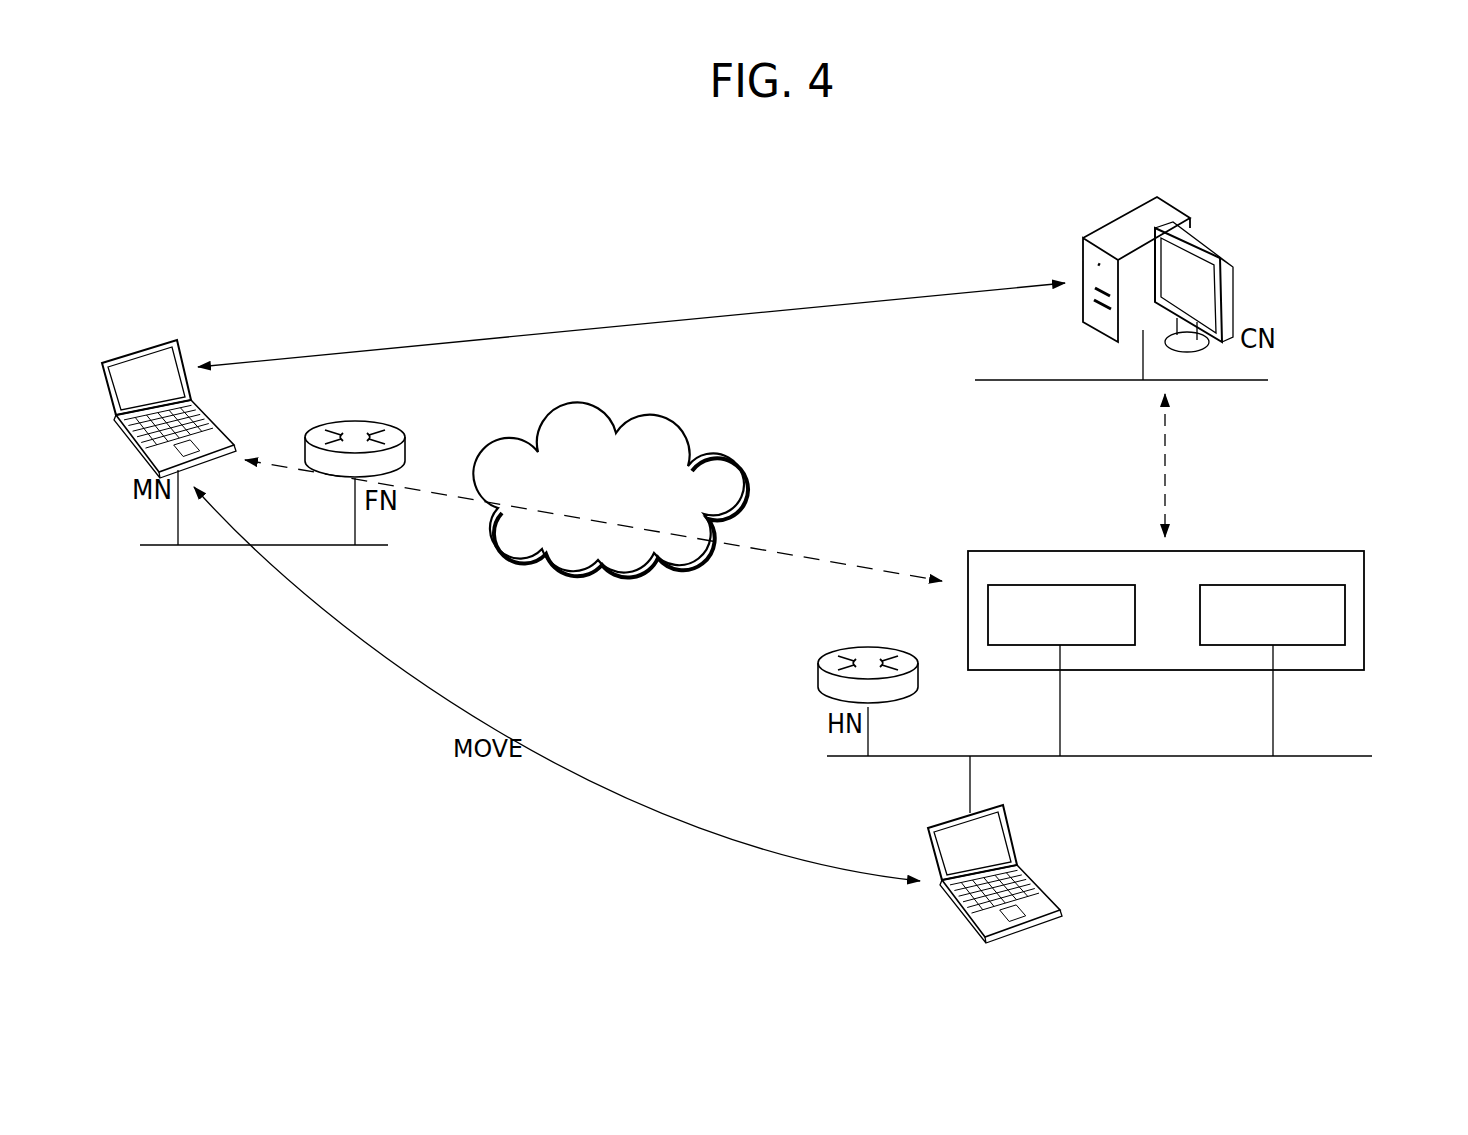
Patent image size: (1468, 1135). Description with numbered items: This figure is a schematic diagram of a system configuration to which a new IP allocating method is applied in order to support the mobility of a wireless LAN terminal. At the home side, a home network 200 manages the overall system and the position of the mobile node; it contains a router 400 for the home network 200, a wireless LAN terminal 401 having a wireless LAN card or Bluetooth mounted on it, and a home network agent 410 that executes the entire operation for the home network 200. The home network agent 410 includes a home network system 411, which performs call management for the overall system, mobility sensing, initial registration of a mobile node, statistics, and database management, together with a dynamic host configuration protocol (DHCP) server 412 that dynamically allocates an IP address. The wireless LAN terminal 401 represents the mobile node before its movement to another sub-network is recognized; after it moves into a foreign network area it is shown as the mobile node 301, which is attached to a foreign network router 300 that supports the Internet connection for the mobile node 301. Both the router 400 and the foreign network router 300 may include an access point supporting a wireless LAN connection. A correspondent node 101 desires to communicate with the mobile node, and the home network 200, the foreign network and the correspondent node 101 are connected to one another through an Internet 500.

The correspondent node 101 is at (1108, 232).
The home network 200 is at (1133, 616).
The foreign network router 300 is at (356, 421).
The mobile node 301 is at (143, 354).
The router 400 is at (838, 647).
The wireless LAN terminal 401 is at (1050, 890).
The home network agent 410 is at (1364, 607).
The home network system 411 is at (1060, 585).
The DHCP server 412 is at (1272, 585).
The Internet 500 is at (633, 425).